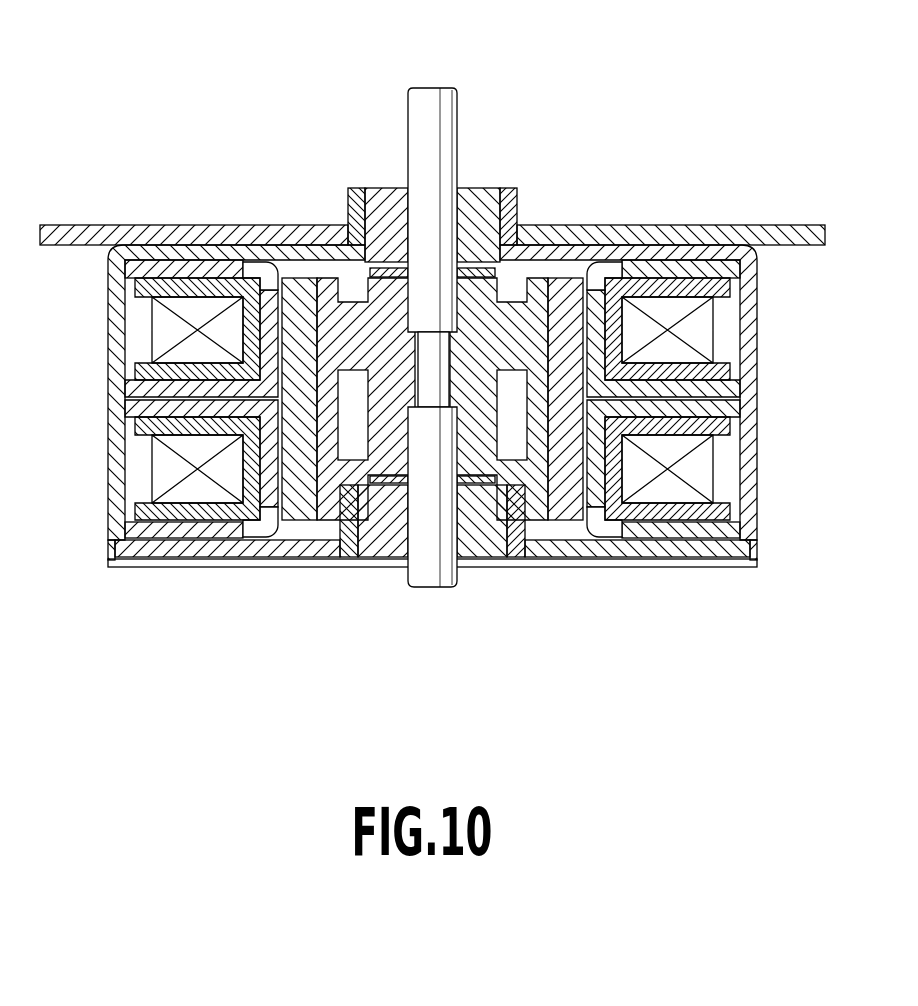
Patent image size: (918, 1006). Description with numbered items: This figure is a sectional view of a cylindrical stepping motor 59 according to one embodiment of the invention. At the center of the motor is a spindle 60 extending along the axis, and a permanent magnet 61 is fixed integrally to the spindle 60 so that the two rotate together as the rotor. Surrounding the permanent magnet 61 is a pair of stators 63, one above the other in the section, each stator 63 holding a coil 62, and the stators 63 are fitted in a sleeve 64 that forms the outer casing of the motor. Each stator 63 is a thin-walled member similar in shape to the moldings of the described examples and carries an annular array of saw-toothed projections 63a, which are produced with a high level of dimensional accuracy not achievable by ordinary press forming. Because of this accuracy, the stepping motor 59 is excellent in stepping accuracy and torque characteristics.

The stepping motor 59 is at (418, 325).
The spindle 60 is at (431, 108).
The permanent magnet 61 is at (565, 515).
The coil 62 is at (705, 326).
The stator 63 is at (678, 268).
The saw-toothed projections 63a is at (237, 330).
The sleeve 64 is at (110, 397).